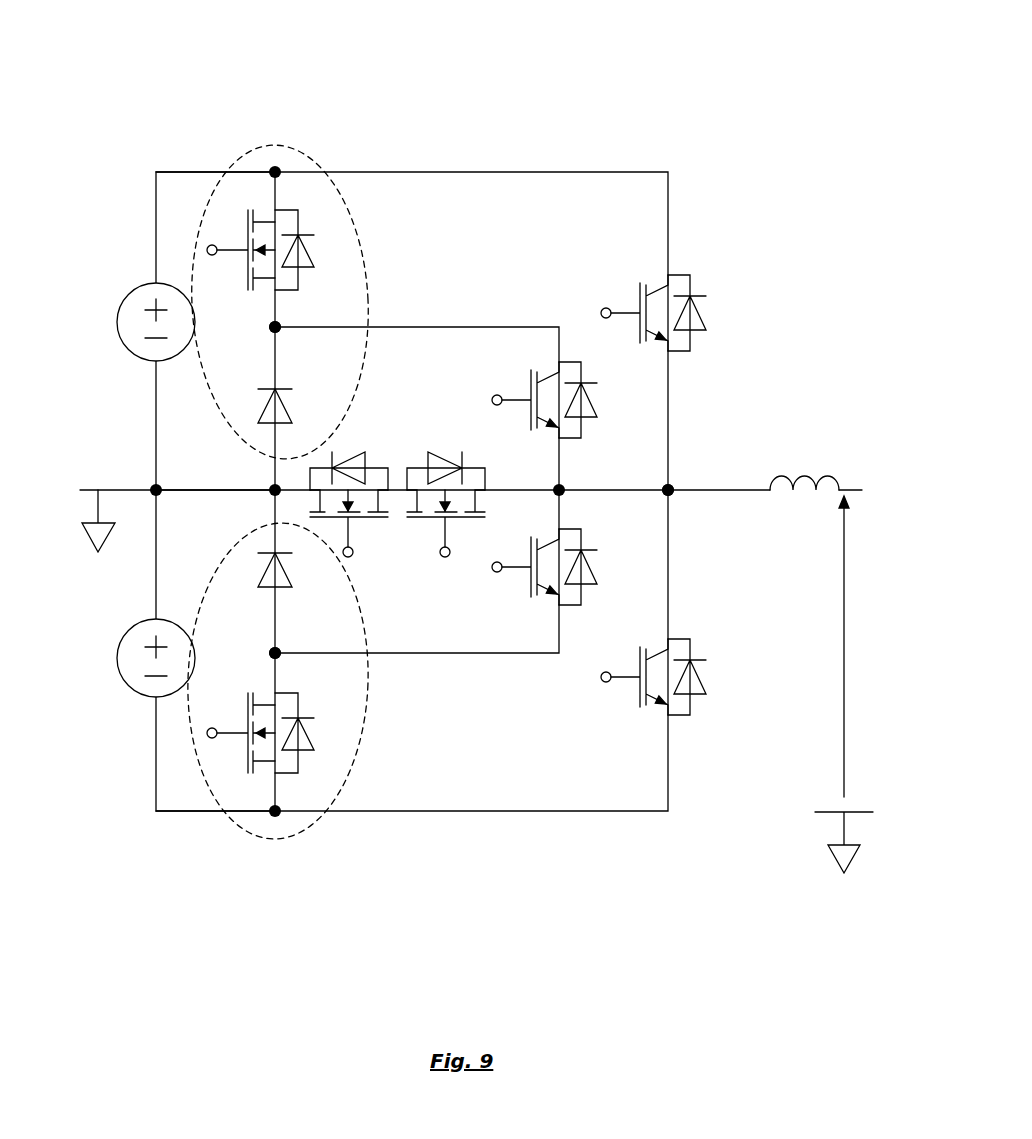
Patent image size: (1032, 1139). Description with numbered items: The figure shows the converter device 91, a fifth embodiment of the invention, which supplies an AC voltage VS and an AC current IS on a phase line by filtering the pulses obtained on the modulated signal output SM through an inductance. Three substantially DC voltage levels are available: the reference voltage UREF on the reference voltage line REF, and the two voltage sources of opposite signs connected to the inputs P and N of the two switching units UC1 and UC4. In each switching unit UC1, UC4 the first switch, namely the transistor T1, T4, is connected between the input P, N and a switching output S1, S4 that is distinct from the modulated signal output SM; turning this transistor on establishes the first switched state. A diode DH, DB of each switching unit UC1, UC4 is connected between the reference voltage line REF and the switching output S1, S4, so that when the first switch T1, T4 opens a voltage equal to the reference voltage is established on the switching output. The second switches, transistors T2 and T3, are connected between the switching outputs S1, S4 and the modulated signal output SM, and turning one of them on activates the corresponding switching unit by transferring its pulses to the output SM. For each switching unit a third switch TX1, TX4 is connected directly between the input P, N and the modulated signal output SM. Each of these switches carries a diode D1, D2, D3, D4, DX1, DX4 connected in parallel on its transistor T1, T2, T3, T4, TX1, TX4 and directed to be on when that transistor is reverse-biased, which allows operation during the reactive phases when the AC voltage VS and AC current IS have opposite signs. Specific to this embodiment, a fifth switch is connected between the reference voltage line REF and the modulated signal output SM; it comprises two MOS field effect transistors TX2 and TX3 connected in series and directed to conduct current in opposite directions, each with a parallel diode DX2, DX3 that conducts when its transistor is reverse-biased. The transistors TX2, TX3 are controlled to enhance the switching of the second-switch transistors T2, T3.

The converter device 91 is at (657, 125).
The switching unit UC1 is at (300, 150).
The switching unit UC4 is at (333, 808).
The switching output S1 is at (278, 325).
The switching output S4 is at (278, 655).
The modulated signal output SM is at (669, 488).
The AC current IS is at (824, 452).
The AC voltage VS is at (860, 646).
The input P is at (215, 156).
The input N is at (215, 797).
The reference voltage level UREF is at (215, 474).
The reference voltage line REF is at (473, 693).
The transistor T1 is at (241, 250).
The transistor T2 is at (525, 400).
The transistor T3 is at (525, 567).
The transistor T4 is at (241, 733).
The diode D1 is at (310, 250).
The diode D2 is at (593, 400).
The diode D3 is at (593, 567).
The diode D4 is at (310, 733).
The diode DH is at (290, 406).
The diode DB is at (290, 570).
The third switch TX1 is at (628, 313).
The MOS field effect transistor TX2 is at (346, 523).
The MOS field effect transistor TX3 is at (449, 523).
The third switch TX4 is at (628, 677).
The diode DX1 is at (709, 313).
The diode DX2 is at (349, 460).
The diode DX3 is at (446, 460).
The diode DX4 is at (709, 677).